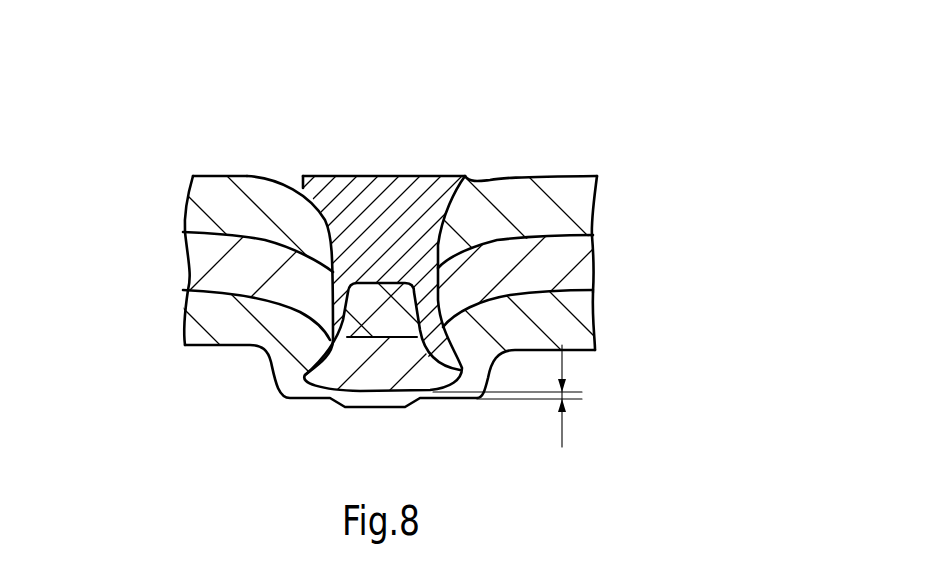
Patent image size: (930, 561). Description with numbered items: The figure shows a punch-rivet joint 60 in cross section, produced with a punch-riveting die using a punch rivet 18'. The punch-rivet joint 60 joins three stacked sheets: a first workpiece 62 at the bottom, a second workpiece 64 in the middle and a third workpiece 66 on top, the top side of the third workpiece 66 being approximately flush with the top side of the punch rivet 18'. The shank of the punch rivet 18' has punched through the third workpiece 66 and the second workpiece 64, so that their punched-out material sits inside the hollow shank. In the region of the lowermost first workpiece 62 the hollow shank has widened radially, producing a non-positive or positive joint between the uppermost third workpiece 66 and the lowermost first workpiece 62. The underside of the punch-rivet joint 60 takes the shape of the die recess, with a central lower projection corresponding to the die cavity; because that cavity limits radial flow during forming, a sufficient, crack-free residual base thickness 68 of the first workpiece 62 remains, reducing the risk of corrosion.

The punch rivet 18' is at (338, 244).
The punch-rivet joint 60 is at (645, 170).
The first workpiece 62 is at (223, 318).
The second workpiece 64 is at (230, 268).
The third workpiece 66 is at (217, 212).
The residual base thickness 68 is at (578, 396).